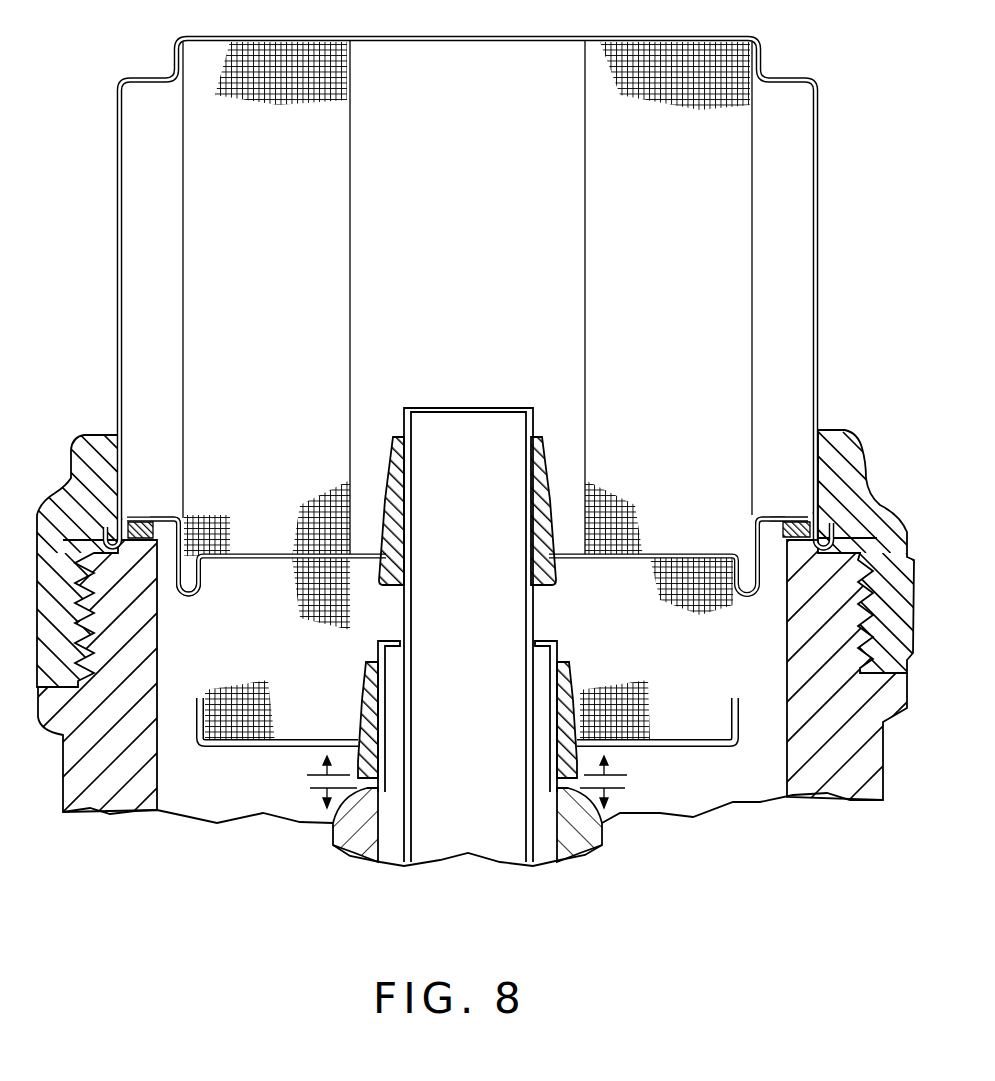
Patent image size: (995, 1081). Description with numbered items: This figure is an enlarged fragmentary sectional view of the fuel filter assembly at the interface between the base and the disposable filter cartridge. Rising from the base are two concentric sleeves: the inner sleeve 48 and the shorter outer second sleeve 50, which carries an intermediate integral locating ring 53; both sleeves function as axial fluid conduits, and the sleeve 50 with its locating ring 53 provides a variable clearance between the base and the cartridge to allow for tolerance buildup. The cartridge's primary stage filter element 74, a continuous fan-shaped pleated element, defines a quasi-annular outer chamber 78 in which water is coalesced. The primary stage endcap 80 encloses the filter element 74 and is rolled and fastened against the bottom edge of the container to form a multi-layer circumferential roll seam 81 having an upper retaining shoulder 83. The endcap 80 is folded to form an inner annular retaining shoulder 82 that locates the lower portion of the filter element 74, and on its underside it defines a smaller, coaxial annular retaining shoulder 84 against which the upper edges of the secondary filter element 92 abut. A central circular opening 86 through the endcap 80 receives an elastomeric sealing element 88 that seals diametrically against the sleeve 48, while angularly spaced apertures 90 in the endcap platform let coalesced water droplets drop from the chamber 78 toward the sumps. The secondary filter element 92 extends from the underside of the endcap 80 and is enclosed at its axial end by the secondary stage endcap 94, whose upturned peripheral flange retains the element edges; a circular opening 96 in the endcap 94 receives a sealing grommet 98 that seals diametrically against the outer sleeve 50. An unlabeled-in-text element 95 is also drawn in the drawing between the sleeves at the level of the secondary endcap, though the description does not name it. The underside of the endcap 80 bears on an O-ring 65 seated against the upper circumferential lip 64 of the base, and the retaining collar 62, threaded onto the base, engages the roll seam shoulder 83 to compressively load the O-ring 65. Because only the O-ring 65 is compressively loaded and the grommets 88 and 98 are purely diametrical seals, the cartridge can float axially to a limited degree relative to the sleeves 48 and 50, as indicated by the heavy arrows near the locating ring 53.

The sleeve 48 is at (525, 615).
The second sleeve 50 is at (575, 640).
The locating ring 53 is at (612, 790).
The retaining collar 62 is at (835, 440).
The upper circumferential lip 64 is at (786, 538).
The O-ring 65 is at (797, 516).
The primary stage filter element 74 is at (672, 287).
The quasi-annular outer chamber 78 is at (145, 160).
The primary stage endcap 80 is at (330, 556).
The circumferential roll seam 81 is at (836, 528).
The inner annular retaining shoulder 82 is at (755, 527).
The upper retaining shoulder 83 is at (812, 522).
The annular retaining shoulder 84 is at (203, 590).
The central circular opening 86 is at (530, 553).
The elastomeric sealing element 88 is at (392, 460).
The apertures 90 is at (180, 517).
The secondary filter element 92 is at (685, 683).
The secondary stage endcap 94 is at (270, 752).
The sleeve 95 is at (388, 622).
The circular opening 96 is at (556, 753).
The sealing grommet 98 is at (366, 690).